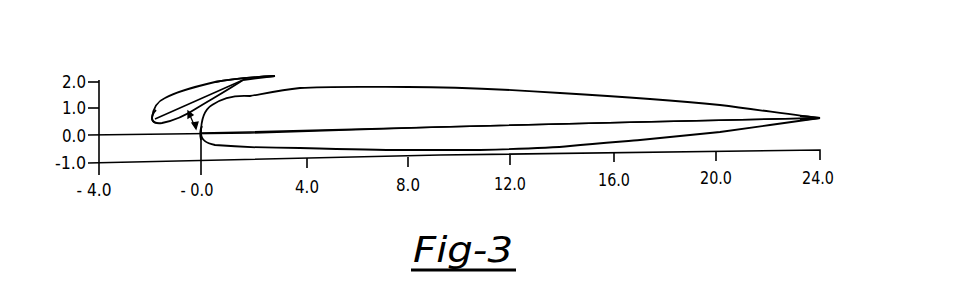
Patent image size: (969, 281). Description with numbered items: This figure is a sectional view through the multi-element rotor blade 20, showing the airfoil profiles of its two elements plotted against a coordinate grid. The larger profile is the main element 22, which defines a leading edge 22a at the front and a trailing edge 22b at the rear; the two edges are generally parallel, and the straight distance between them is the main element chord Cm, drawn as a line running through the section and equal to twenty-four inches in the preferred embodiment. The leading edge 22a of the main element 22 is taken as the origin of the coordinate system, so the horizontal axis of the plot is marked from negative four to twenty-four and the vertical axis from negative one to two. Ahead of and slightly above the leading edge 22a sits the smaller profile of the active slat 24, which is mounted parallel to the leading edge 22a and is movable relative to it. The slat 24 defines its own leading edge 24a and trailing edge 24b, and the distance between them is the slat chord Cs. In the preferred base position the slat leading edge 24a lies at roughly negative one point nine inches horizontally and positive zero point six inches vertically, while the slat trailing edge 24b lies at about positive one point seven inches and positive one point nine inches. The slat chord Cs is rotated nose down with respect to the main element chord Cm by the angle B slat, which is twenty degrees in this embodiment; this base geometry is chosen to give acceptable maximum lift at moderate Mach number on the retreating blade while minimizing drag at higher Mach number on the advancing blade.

The multi-element rotor blade 20 is at (516, 54).
The main element 22 is at (408, 85).
The leading edge 22a is at (200, 133).
The trailing edge 22b is at (820, 118).
The active slat 24 is at (182, 93).
The slat leading edge 24a is at (152, 121).
The slat trailing edge 24b is at (275, 76).
The slat chord length Cs is at (190, 101).
The main element chord length Cm is at (572, 123).
The slat rotation angle B slat is at (243, 79).